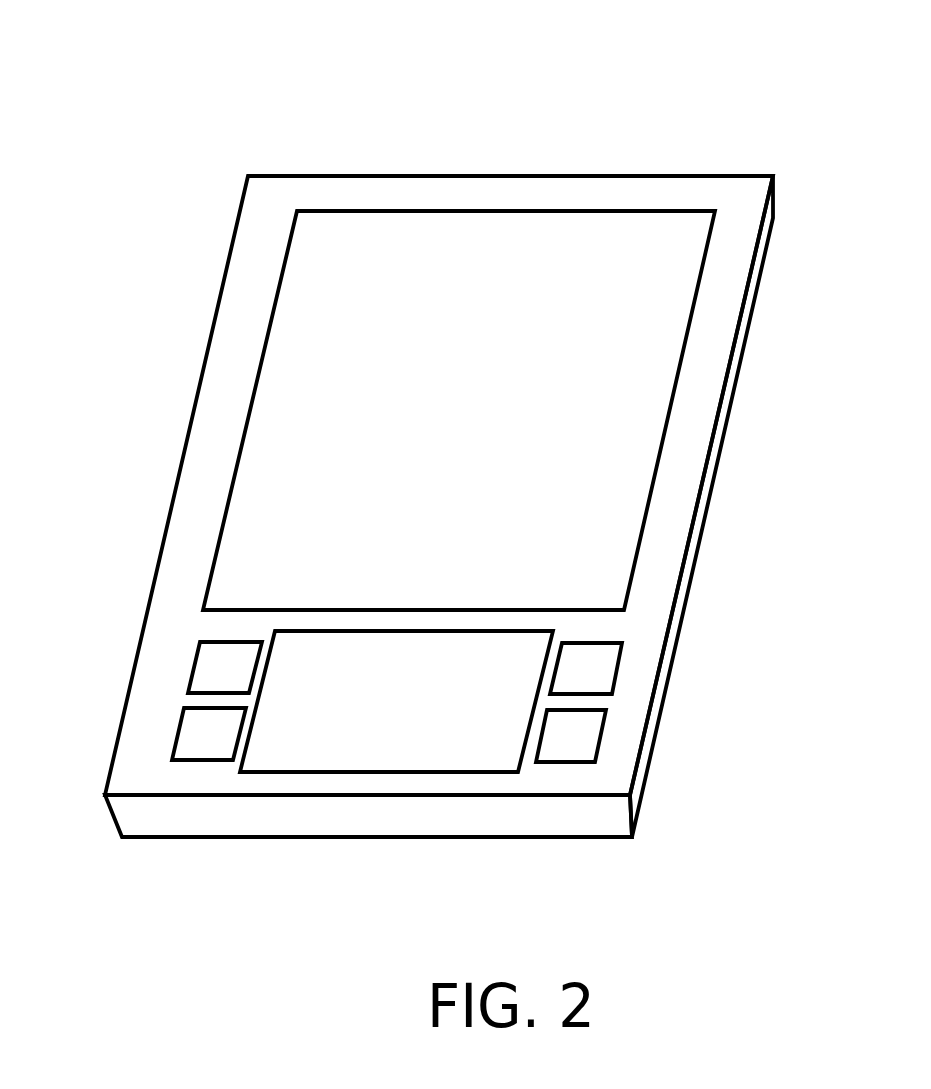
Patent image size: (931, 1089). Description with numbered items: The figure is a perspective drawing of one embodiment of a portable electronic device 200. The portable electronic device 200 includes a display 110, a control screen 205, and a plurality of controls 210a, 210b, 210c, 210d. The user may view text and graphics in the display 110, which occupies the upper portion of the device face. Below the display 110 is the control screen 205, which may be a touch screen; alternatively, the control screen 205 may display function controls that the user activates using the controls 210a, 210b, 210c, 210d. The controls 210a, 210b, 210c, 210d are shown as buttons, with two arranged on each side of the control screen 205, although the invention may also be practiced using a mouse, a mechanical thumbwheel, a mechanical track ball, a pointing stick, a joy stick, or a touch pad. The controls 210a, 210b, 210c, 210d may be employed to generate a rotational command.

The portable electronic device 200 is at (170, 90).
The display 110 is at (285, 367).
The control screen 205 is at (440, 643).
The control 210a is at (227, 667).
The control 210b is at (203, 730).
The control 210c is at (605, 675).
The control 210d is at (568, 737).